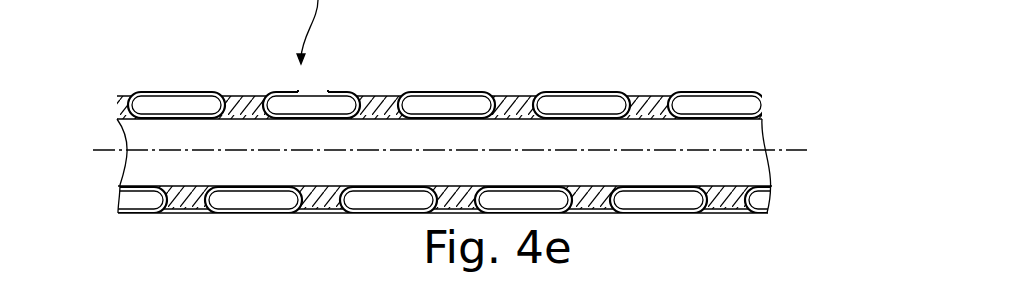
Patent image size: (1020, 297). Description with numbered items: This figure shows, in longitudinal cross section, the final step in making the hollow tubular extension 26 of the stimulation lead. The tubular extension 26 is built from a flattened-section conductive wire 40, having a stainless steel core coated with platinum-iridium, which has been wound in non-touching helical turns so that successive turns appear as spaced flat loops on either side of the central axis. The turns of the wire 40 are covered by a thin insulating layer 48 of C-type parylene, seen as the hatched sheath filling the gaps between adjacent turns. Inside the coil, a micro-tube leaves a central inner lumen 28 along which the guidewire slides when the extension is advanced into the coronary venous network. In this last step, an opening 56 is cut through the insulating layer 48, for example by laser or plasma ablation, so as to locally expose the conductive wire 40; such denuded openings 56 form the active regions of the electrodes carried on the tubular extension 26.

The tubular extension 26 is at (153, 67).
The inner lumen 28 is at (137, 165).
The wire 40 is at (280, 106).
The insulating layer 48 is at (288, 92).
The opening 56 is at (313, 90).